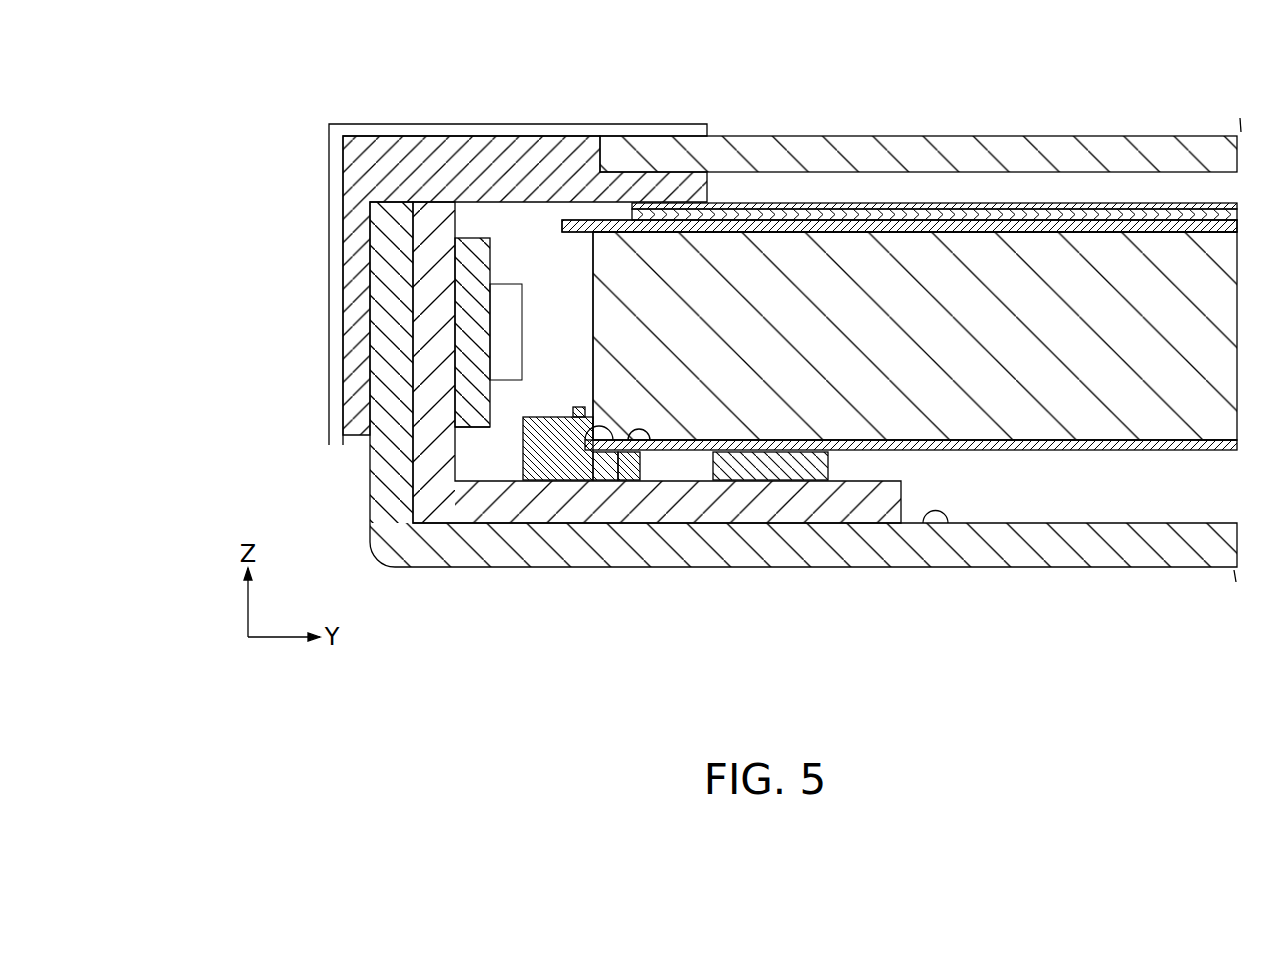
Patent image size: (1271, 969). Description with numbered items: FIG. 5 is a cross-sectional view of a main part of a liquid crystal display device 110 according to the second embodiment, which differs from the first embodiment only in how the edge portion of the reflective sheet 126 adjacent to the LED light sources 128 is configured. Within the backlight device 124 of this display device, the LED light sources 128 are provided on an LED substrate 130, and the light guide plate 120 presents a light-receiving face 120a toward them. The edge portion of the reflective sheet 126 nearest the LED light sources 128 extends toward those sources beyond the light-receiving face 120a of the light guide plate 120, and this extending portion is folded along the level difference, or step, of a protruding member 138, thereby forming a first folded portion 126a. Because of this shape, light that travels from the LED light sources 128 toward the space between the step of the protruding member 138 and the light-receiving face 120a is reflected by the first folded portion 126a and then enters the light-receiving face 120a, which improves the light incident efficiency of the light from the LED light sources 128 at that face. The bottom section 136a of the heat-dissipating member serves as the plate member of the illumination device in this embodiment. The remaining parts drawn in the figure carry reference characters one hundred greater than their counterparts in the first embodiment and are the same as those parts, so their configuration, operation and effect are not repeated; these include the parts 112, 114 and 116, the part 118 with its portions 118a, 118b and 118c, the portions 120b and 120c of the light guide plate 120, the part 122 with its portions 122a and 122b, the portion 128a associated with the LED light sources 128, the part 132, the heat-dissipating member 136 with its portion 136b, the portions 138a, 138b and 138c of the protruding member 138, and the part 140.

The liquid crystal display device 110 is at (840, 92).
The outer cover 112 is at (364, 130).
The frame 114 is at (443, 162).
The front plate 116 is at (753, 157).
The optical sheet stack 118 is at (985, 88).
The first optical sheet 118a is at (990, 227).
The second optical sheet 118b is at (1060, 214).
The third optical sheet 118c is at (1115, 205).
The light guide plate 120 is at (1108, 382).
The light-receiving face 120a is at (593, 265).
The upper surface of light guide plate 120b is at (903, 232).
The lower surface of light guide plate 120c is at (1150, 443).
The bottom chassis 122 is at (980, 543).
The protrusion of bottom chassis 122a is at (926, 523).
The side wall of bottom chassis 122b is at (397, 343).
The backlight device 124 is at (850, 585).
The reflective sheet 126 is at (1038, 443).
The first folded portion 126a is at (597, 427).
The LED light sources 128 is at (503, 307).
The end of light source substrate 128a is at (490, 425).
The LED substrate 130 is at (467, 333).
The light source unit 132 is at (260, 240).
The holding frame 136 is at (433, 478).
The bottom section 136a is at (723, 505).
The side portion of holding frame 136b is at (433, 362).
The protruding member 138 is at (552, 463).
The first portion of fixing member 138a is at (657, 450).
The tab of fixing member 138b is at (573, 412).
The second portion of fixing member 138c is at (625, 452).
The spacer 140 is at (772, 465).